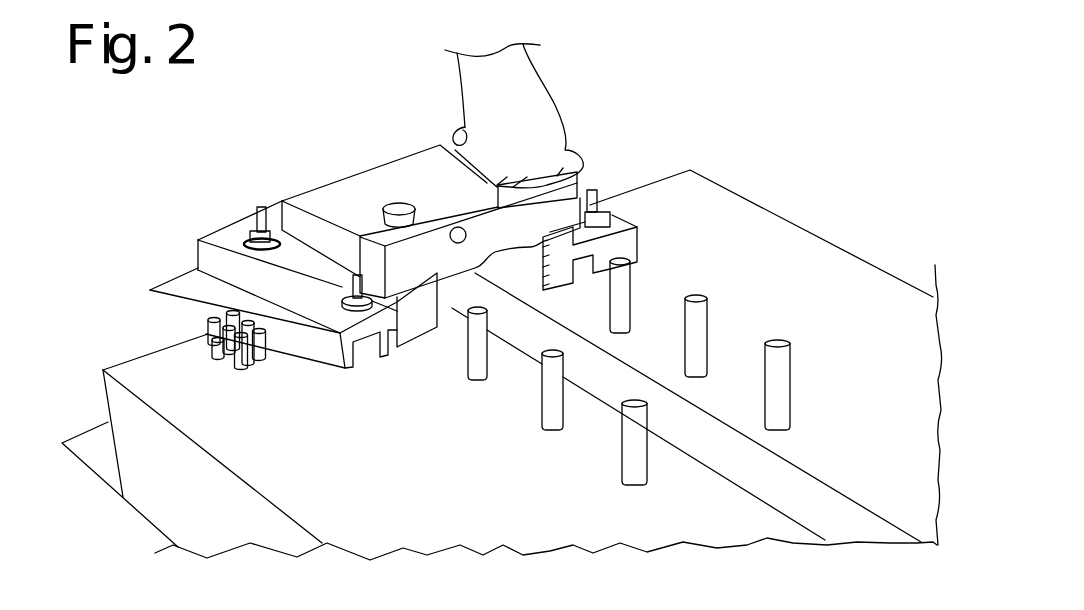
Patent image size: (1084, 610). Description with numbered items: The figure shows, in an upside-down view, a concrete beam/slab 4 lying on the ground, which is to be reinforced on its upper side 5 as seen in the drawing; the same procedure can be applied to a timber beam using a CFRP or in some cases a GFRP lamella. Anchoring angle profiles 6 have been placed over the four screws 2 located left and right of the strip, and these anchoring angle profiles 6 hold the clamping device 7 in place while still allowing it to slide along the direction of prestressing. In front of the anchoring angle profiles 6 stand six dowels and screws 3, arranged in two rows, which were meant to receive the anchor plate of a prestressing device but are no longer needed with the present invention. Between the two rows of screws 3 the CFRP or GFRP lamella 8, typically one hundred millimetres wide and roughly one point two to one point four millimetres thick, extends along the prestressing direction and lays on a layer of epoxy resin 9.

The screws 2 is at (353, 288).
The dowels and screws 3 is at (777, 380).
The concrete beam/slab 4 is at (707, 233).
The upper side 5 is at (778, 291).
The anchoring angle profiles 6 is at (231, 243).
The clamping device 7 is at (425, 184).
The CFRP or GFRP lamella 8 is at (755, 466).
The layer of epoxy resin 9 is at (762, 501).